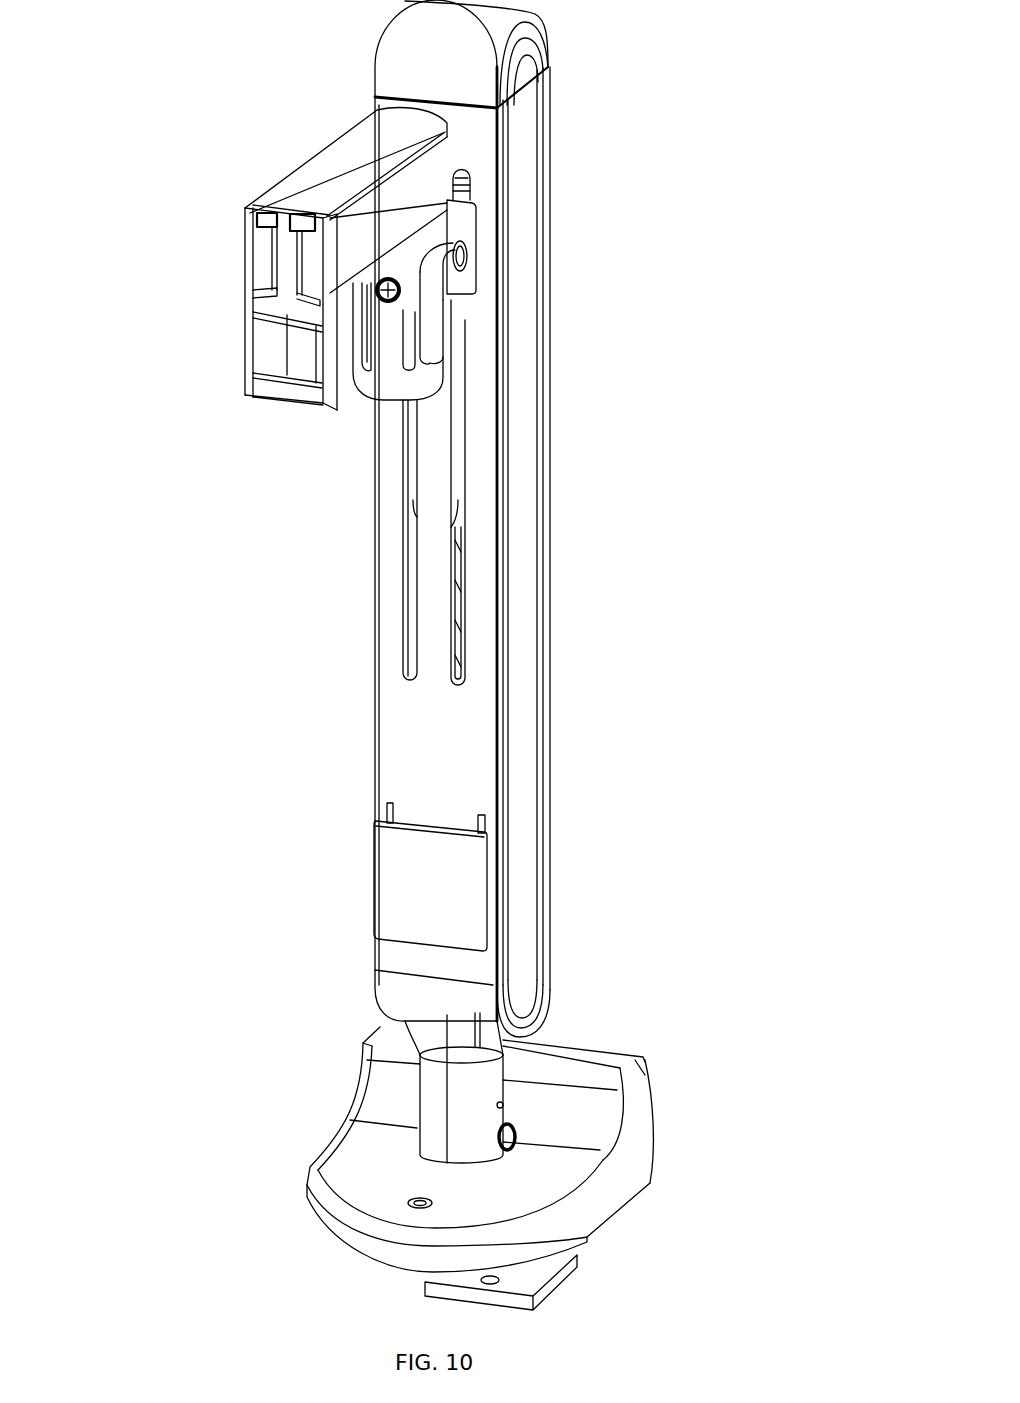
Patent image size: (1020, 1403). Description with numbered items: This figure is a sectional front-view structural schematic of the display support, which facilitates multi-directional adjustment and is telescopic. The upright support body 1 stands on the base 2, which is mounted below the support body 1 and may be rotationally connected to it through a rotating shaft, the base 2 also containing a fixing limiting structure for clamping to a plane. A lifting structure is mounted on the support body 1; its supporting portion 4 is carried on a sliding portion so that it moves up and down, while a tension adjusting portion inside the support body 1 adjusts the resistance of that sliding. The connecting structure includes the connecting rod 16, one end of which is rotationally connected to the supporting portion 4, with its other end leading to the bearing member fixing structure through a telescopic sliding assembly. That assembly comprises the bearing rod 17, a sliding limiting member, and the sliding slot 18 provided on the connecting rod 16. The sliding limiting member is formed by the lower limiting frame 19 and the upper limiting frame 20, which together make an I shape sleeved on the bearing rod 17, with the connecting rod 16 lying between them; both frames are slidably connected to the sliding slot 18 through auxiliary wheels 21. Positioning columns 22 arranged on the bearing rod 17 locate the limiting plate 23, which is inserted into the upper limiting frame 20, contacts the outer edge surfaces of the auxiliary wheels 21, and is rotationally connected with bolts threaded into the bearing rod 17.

The support body 1 is at (517, 895).
The base 2 is at (592, 1058).
The supporting portion 4 is at (405, 260).
The connecting rod 16 is at (260, 247).
The bearing rod 17 is at (278, 303).
The sliding slot 18 is at (248, 217).
The lower limiting frame 19 is at (248, 310).
The upper limiting frame 20 is at (247, 208).
The auxiliary wheel 21 is at (440, 252).
The positioning column 22 is at (330, 220).
The limiting plate 23 is at (330, 218).